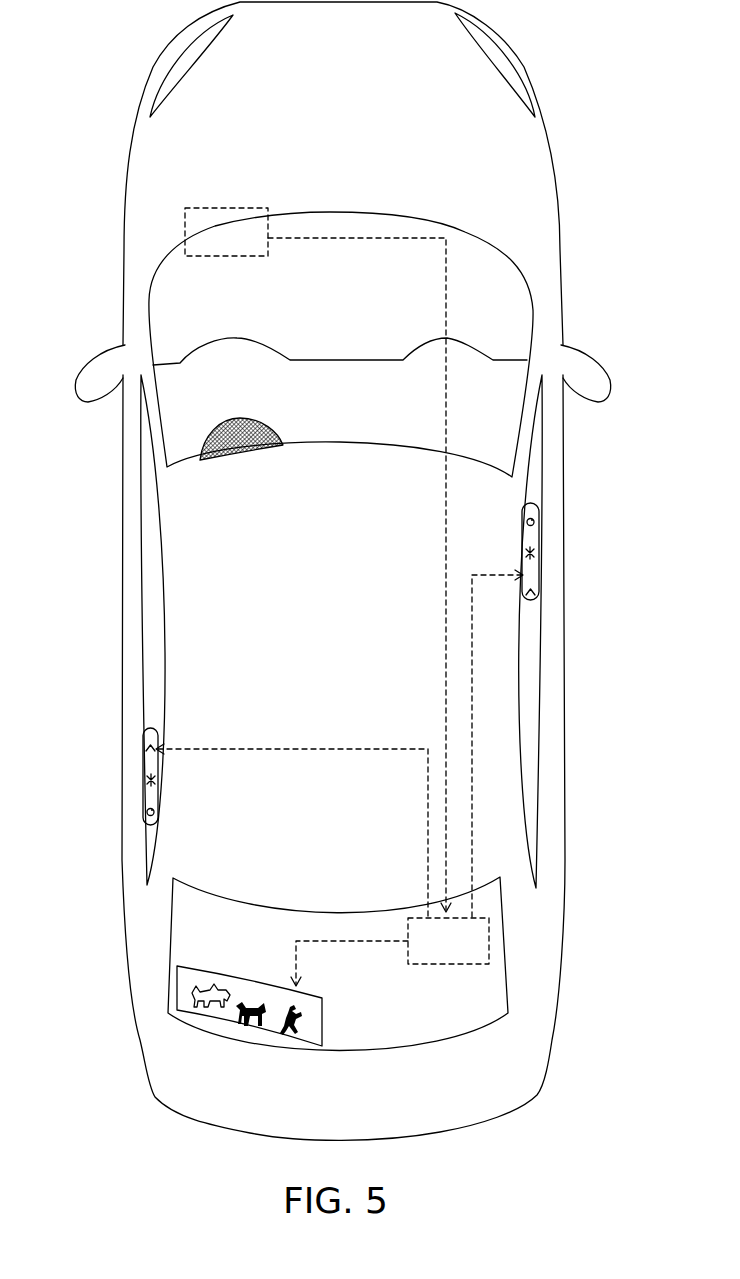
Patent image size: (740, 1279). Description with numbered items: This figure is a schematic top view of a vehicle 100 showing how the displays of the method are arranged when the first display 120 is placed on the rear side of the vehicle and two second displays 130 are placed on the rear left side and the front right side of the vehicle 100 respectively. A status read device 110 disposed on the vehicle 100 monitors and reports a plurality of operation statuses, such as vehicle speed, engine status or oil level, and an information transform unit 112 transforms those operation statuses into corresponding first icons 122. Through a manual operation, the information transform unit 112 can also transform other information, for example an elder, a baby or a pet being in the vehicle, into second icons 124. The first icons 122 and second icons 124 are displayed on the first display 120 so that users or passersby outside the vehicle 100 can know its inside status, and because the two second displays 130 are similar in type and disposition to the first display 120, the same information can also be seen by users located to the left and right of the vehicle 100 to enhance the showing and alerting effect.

The vehicle 100 is at (543, 172).
The status read device 110 is at (185, 238).
The information transform unit 112 is at (489, 940).
The first display 120 is at (323, 1016).
The first icons 122 is at (143, 818).
The second icons 124 is at (147, 779).
The second display 130 is at (148, 730).